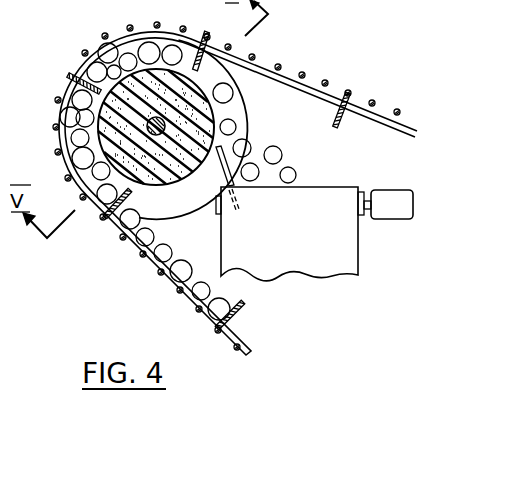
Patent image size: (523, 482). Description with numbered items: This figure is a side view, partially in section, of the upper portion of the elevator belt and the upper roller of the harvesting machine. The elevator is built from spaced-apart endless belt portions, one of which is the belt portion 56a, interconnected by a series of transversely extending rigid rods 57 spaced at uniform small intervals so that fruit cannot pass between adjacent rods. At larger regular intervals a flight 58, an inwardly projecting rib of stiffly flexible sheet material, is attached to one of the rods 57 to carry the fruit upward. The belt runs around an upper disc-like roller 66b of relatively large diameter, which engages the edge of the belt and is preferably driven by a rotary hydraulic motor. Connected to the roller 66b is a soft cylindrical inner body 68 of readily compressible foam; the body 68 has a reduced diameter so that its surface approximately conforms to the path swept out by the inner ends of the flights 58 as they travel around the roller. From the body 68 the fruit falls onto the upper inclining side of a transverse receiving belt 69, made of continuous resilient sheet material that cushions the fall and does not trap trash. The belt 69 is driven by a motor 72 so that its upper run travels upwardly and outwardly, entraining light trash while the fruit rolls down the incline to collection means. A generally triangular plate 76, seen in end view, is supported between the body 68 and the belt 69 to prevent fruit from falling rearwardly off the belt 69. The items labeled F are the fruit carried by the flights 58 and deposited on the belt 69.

The endless belt portion 56a is at (311, 78).
The transversely extending rigid rods 57 is at (103, 34).
The flight 58 is at (340, 127).
The disc member or roller 66b is at (237, 110).
The soft cylindrical inner roller member or body 68 is at (242, 84).
The endless belt 69 is at (310, 234).
The motor 72 is at (398, 192).
The generally triangular plate 76 is at (216, 178).
The fasteners F is at (301, 148).